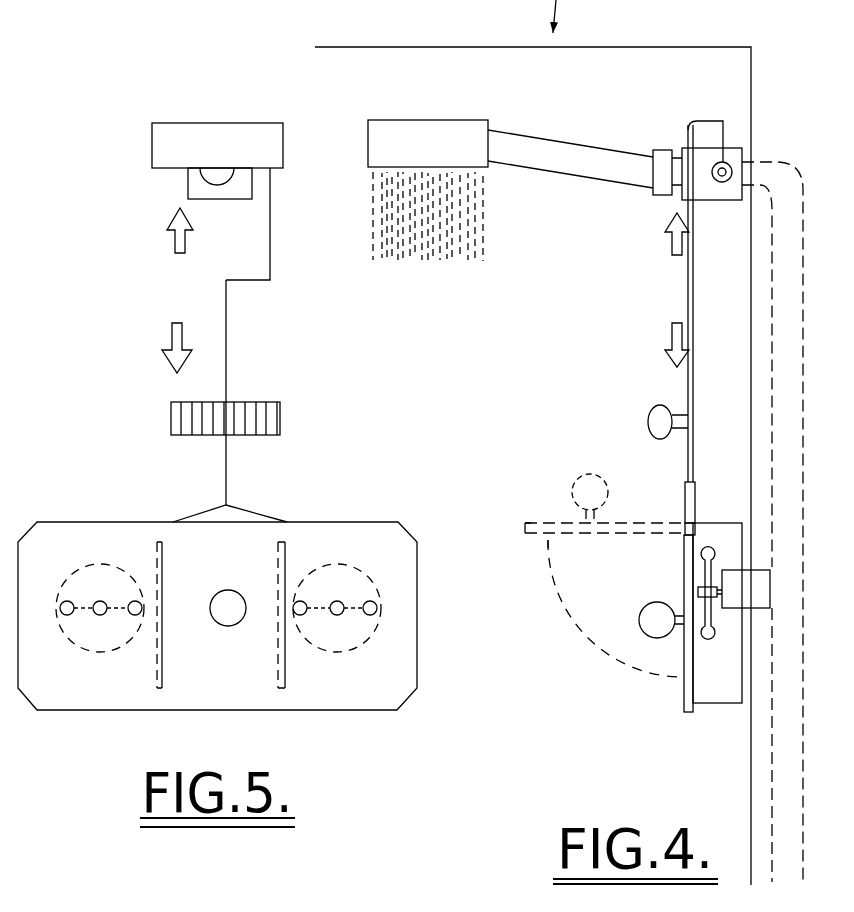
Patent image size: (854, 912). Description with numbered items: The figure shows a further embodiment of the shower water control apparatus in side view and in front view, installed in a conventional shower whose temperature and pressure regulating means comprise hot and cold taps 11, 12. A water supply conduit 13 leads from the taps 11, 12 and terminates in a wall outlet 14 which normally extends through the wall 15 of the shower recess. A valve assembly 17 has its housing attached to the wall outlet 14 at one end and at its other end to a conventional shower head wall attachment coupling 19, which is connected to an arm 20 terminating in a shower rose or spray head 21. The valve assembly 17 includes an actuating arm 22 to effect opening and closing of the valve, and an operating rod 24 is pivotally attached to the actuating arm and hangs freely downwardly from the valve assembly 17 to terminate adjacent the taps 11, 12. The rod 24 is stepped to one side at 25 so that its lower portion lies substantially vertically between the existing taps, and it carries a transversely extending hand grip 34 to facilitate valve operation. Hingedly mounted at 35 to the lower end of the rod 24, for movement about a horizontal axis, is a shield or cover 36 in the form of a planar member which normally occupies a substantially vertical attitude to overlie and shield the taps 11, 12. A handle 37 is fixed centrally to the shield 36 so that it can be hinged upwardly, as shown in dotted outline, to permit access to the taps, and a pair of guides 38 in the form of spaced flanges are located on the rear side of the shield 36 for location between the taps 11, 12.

In FIG. 5, the hot tap 11 is at (378, 622).
In FIG. 4, the hot tap 11 is at (730, 617).
In FIG. 5, the cold tap 12 is at (100, 628).
In FIG. 4, the cold tap 12 is at (699, 673).
In FIG. 4, the water supply conduit 13 is at (780, 378).
In FIG. 4, the wall outlet 14 is at (747, 165).
In FIG. 4, the wall 15 is at (751, 68).
In FIG. 5, the valve assembly 17 is at (252, 192).
In FIG. 4, the valve assembly 17 is at (682, 142).
In FIG. 4, the shower head wall attachment coupling 19 is at (662, 185).
In FIG. 4, the arm 20 is at (580, 163).
In FIG. 5, the shower rose or spray head 21 is at (225, 133).
In FIG. 4, the shower rose or spray head 21 is at (427, 127).
In FIG. 4, the actuating arm 22 is at (710, 128).
In FIG. 5, the operating rod 24 is at (226, 377).
In FIG. 4, the operating rod 24 is at (688, 312).
In FIG. 5, the step 25 is at (262, 289).
In FIG. 5, the hand grip 34 is at (182, 436).
In FIG. 4, the hand grip 34 is at (648, 422).
In FIG. 5, the hinge mounting 35 is at (83, 522).
In FIG. 4, the hinge mounting 35 is at (696, 522).
In FIG. 5, the shield or cover 36 is at (330, 530).
In FIG. 4, the shield or cover 36 is at (682, 583).
In FIG. 5, the handle 37 is at (220, 608).
In FIG. 4, the handle 37 is at (637, 627).
In FIG. 5, the guides 38 is at (163, 678).
In FIG. 4, the guides 38 is at (732, 707).